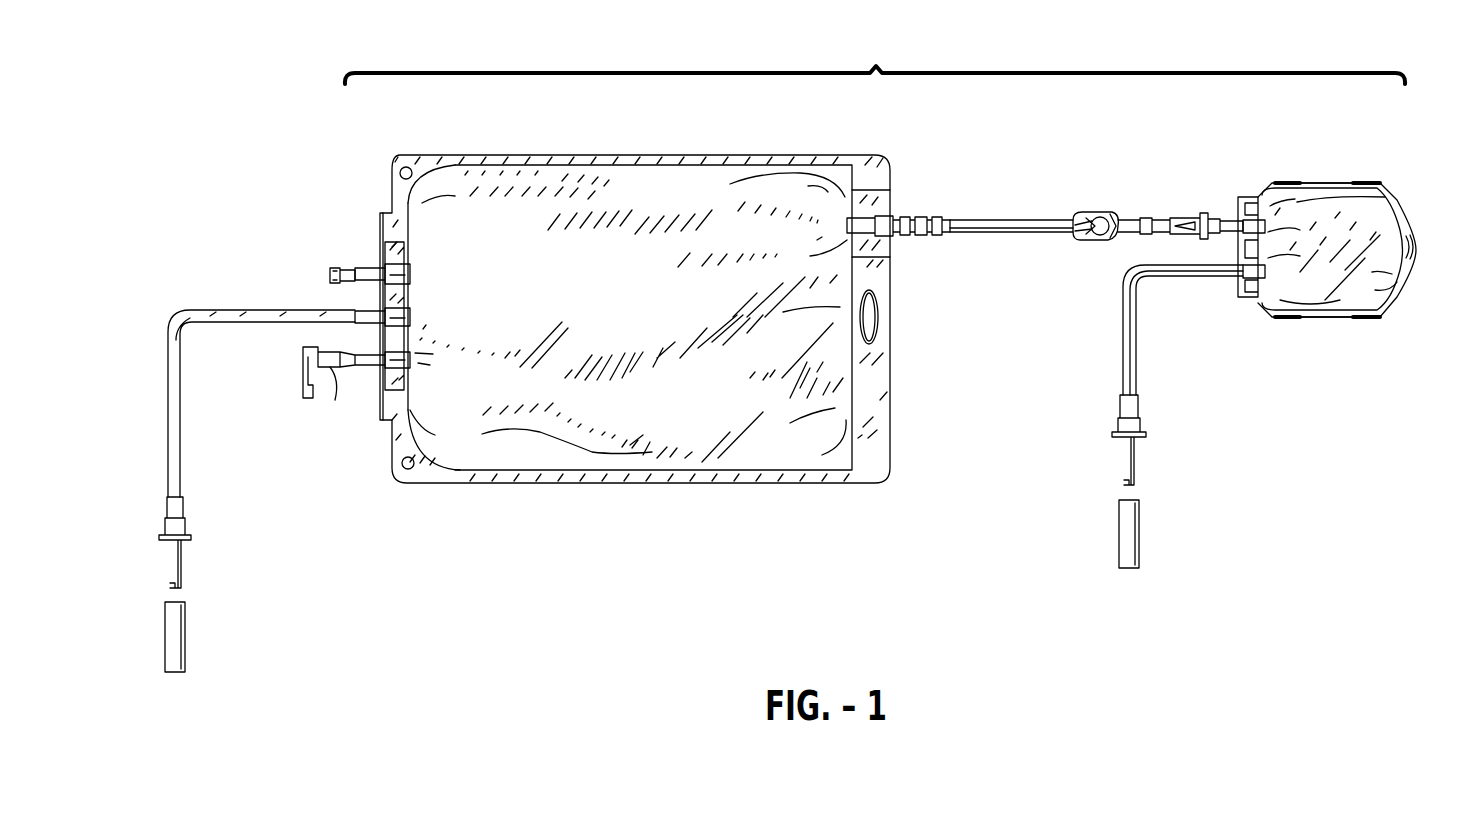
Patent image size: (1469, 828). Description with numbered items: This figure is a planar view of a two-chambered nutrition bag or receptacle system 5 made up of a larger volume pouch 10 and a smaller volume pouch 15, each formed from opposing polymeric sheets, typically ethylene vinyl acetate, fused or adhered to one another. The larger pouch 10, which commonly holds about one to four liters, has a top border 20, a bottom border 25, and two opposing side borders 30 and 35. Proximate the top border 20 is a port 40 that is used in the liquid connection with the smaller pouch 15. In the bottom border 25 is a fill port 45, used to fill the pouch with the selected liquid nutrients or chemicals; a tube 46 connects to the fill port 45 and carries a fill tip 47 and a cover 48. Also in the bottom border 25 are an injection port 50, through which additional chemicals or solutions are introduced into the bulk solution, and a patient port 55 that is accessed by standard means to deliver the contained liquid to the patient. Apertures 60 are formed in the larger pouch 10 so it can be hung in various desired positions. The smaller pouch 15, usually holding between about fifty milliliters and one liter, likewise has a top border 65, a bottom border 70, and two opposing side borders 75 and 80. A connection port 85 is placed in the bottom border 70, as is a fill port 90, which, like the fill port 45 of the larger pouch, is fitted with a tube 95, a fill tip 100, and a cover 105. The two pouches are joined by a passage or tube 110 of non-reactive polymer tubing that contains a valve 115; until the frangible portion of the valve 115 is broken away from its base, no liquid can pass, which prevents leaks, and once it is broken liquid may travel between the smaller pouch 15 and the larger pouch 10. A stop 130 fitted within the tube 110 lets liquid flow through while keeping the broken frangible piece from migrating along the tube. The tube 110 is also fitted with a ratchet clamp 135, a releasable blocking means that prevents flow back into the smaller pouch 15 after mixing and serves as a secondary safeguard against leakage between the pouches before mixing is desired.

The two-chambered nutrition bag or receptacle system 5 is at (875, 60).
The larger volume pouch 10 is at (528, 452).
The smaller volume pouch 15 is at (1383, 213).
The top border 20 is at (895, 447).
The bottom border 25 is at (430, 241).
The side border 30 is at (715, 155).
The side border 35 is at (605, 485).
The port 40 is at (897, 215).
The fill port 45 is at (412, 322).
The tube 46 is at (208, 308).
The fill tip 47 is at (170, 565).
The cover 48 is at (172, 668).
The injection port 50 is at (370, 268).
The patient port 55 is at (328, 390).
The apertures 60 is at (400, 174).
The top border 65 is at (1412, 275).
The bottom border 70 is at (1262, 258).
The side border 75 is at (1288, 178).
The side border 80 is at (1322, 318).
The connection port 85 is at (1228, 212).
The fill port 90 is at (1242, 292).
The tube 95 is at (1138, 345).
The fill tip 100 is at (1125, 466).
The cover 105 is at (1128, 568).
The passage or tube 110 is at (1123, 240).
The valve 115 is at (1148, 212).
The stop 130 is at (950, 218).
The ratchet clamp 135 is at (1096, 240).